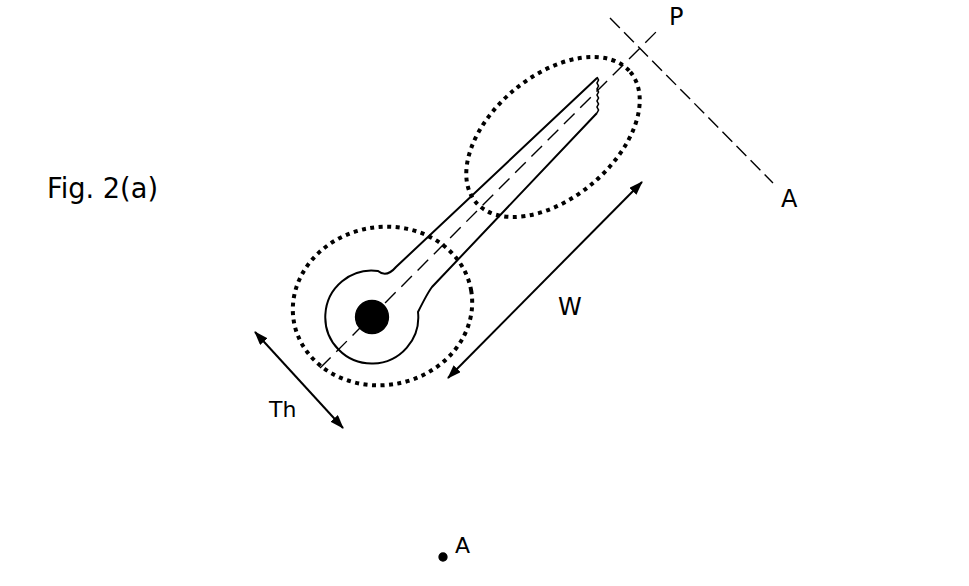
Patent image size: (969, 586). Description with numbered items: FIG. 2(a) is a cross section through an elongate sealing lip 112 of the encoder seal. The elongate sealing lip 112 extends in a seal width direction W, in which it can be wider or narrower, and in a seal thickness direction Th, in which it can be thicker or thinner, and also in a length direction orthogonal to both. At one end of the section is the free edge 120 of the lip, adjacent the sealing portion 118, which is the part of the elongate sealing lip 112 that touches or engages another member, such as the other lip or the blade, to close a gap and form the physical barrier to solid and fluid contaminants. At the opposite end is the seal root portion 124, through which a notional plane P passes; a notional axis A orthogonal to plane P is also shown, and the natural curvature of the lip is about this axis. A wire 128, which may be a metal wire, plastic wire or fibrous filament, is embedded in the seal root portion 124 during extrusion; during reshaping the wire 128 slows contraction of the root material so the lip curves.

The elongate sealing lip 112 is at (448, 222).
The sealing portion 118 is at (642, 97).
The free edge 120 is at (596, 79).
The seal root portion 124 is at (295, 300).
The wire 128 is at (380, 333).